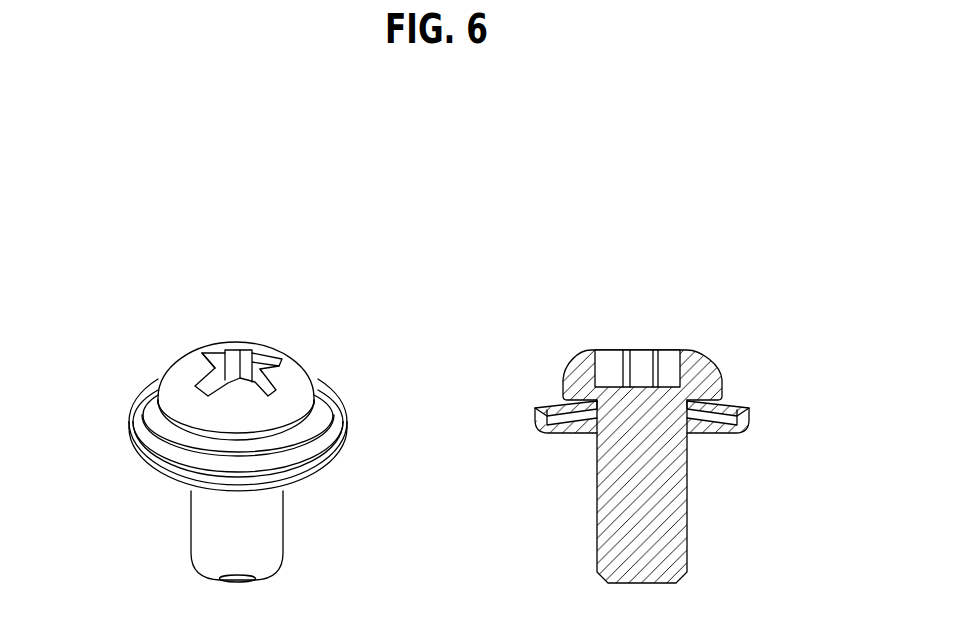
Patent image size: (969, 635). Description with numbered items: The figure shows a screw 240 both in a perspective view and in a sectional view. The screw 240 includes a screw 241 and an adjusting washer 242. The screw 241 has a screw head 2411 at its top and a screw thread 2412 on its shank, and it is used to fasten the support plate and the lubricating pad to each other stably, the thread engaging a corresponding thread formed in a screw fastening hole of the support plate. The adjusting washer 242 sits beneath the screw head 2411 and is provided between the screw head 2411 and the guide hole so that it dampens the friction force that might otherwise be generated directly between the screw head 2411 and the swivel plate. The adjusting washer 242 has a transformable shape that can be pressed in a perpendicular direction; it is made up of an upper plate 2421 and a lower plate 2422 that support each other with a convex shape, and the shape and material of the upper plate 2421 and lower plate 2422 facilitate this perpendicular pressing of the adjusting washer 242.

The screw 240 is at (80, 247).
The screw 241 is at (176, 350).
The adjusting washer 242 is at (136, 381).
The screw head 2411 is at (567, 383).
The screw thread 2412 is at (597, 501).
The upper plate 2421 is at (723, 404).
The lower plate 2422 is at (717, 430).